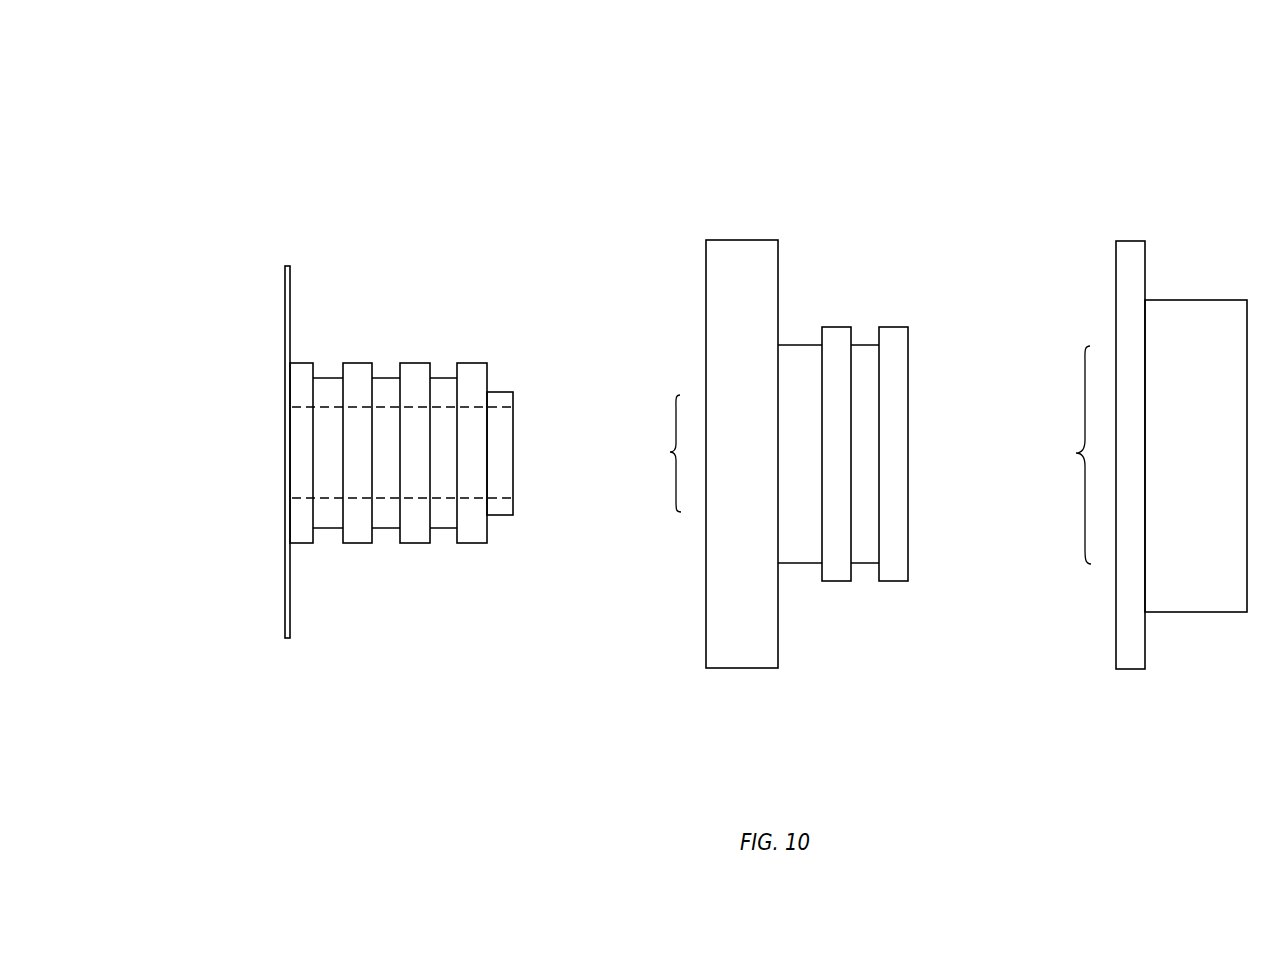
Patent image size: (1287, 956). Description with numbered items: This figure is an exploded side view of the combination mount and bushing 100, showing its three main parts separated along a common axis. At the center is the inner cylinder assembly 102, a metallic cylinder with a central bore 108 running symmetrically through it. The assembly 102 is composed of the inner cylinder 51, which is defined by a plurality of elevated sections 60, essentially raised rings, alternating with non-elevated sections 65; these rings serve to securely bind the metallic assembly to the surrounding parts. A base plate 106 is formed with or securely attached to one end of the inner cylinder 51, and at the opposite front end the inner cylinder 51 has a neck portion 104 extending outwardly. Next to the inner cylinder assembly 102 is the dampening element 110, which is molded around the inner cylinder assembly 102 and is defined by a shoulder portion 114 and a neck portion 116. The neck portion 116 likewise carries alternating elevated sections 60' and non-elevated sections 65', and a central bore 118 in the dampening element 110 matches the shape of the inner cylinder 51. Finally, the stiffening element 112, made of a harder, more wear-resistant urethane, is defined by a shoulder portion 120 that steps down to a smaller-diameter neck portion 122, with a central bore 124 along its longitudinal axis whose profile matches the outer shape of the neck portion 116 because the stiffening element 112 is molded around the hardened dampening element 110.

The Combination Mount and Bushing 100 is at (378, 148).
The inner cylinder assembly 102 is at (329, 655).
The base plate 106 is at (285, 297).
The inner cylinder 51 is at (513, 348).
The elevated sections 60 is at (393, 538).
The non-elevated sections 65 is at (385, 545).
The neck portion 104 is at (500, 516).
The central bore 108 is at (269, 406).
The dampening element 110 is at (890, 653).
The shoulder portion 114 is at (755, 240).
The neck portion 116 is at (783, 252).
The central bore 118 is at (670, 452).
The elevated sections 60' is at (865, 416).
The non-elevated sections 65' is at (828, 510).
The stiffening element 112 is at (1258, 663).
The shoulder portion 120 is at (1128, 240).
The neck portion 122 is at (1213, 300).
The central bore 124 is at (1076, 453).